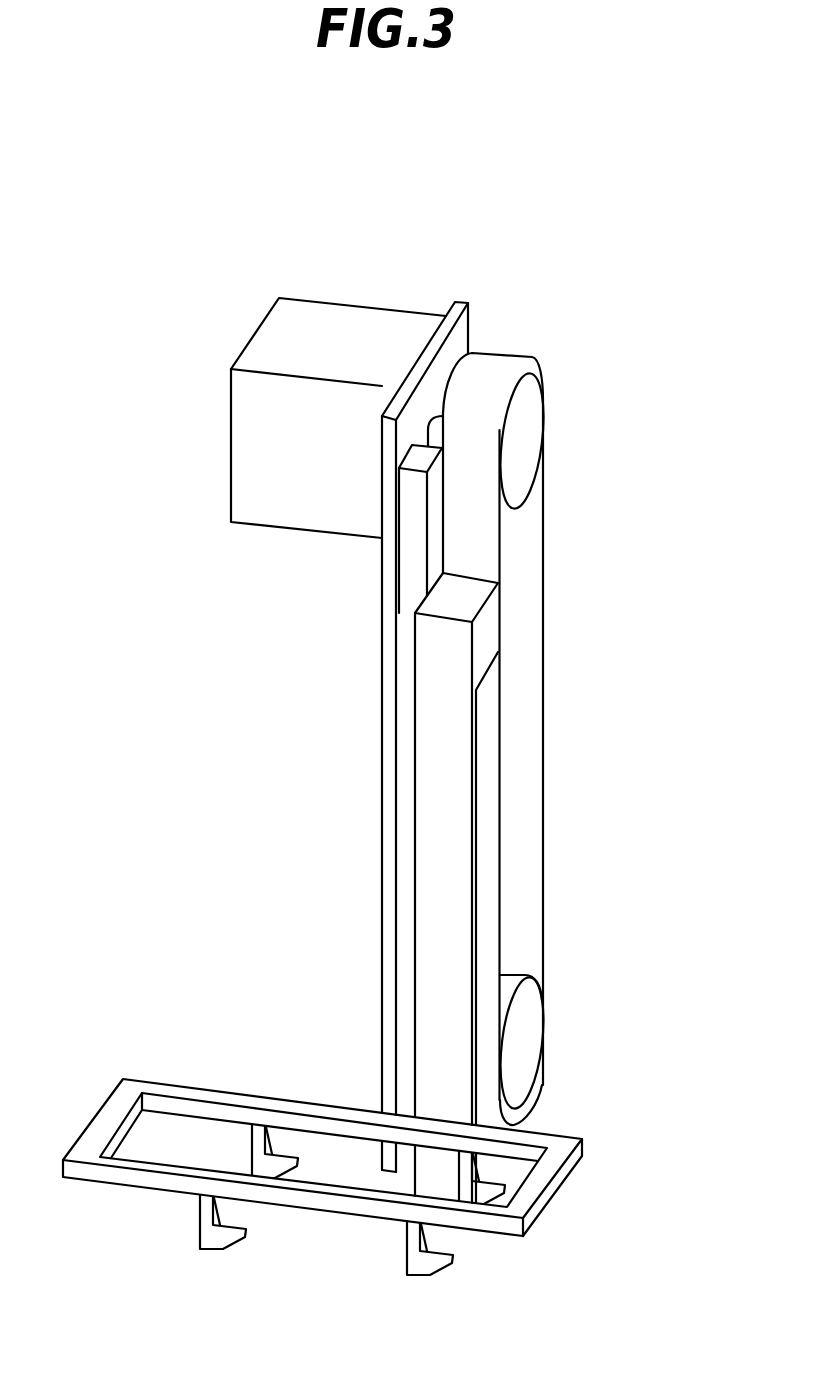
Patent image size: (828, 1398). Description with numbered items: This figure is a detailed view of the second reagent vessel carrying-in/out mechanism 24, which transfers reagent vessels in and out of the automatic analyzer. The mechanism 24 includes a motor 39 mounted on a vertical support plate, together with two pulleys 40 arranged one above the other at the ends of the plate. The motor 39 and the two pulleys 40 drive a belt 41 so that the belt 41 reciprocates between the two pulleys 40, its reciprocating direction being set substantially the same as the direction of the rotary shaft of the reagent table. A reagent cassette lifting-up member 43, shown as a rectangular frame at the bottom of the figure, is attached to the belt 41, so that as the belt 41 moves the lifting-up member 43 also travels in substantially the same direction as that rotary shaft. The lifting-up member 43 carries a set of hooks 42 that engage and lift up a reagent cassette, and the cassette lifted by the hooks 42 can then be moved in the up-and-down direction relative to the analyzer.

The second reagent vessel carrying-in/out mechanism 24 is at (508, 308).
The motor 39 is at (270, 340).
The pulley 40 is at (533, 412).
The belt 41 is at (530, 672).
The hook 42 is at (223, 1250).
The reagent cassette lifting-up member 43 is at (108, 1098).